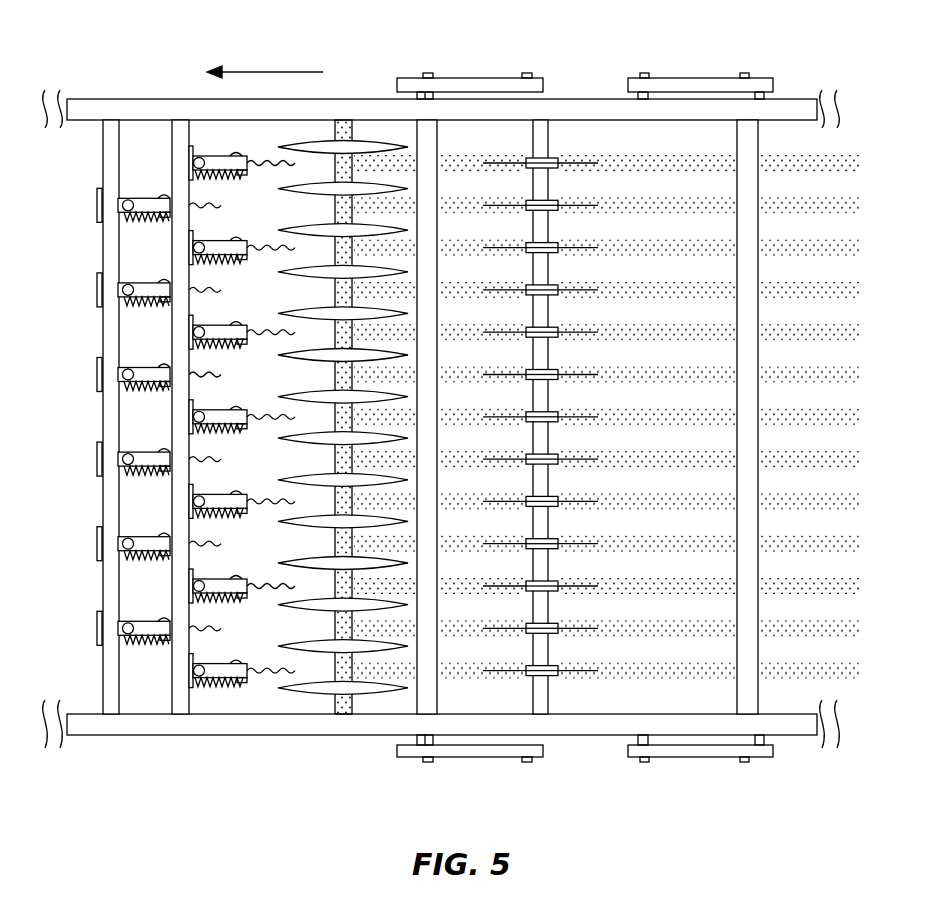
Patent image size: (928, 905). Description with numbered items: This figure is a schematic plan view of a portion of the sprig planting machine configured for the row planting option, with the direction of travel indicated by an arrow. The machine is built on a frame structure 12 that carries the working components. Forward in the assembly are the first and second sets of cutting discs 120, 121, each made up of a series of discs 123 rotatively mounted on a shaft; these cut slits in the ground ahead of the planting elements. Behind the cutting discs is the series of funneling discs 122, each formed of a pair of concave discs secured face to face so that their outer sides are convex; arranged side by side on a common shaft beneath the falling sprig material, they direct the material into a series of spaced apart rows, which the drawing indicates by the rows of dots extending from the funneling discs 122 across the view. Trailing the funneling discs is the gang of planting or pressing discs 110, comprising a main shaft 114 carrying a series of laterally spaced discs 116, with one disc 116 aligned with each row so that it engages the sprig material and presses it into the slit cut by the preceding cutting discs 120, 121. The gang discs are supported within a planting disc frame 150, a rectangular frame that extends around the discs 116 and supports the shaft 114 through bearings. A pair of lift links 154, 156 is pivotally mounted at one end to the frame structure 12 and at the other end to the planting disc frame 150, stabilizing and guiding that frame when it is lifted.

The frame structure 12 is at (318, 728).
The gang of planting or pressing discs 110 is at (584, 469).
The main shaft 114 is at (550, 473).
The discs 116 is at (585, 290).
The first set of cutting discs 120 is at (141, 678).
The second set of cutting discs 121 is at (230, 705).
The funneling discs 122 is at (356, 82).
The discs 123 is at (204, 206).
The planting disc frame 150 is at (750, 221).
The lift link 154 is at (471, 752).
The lift link 156 is at (691, 752).